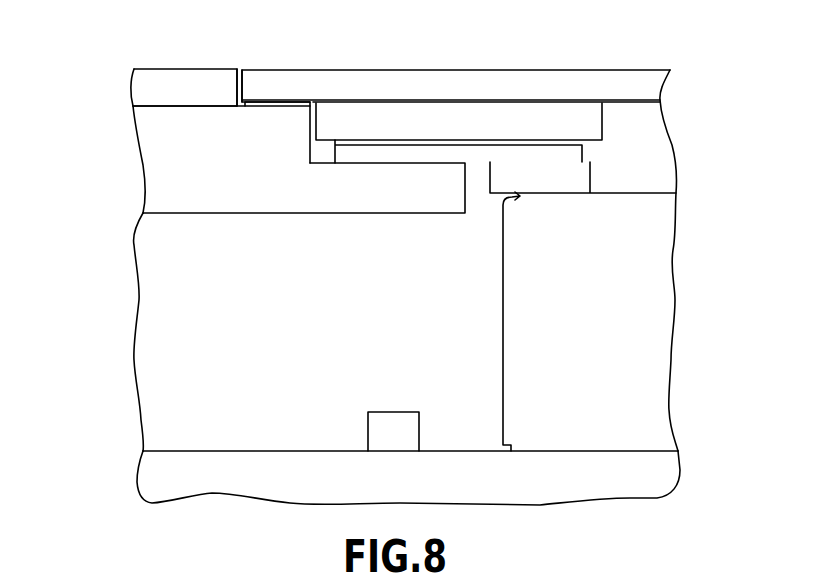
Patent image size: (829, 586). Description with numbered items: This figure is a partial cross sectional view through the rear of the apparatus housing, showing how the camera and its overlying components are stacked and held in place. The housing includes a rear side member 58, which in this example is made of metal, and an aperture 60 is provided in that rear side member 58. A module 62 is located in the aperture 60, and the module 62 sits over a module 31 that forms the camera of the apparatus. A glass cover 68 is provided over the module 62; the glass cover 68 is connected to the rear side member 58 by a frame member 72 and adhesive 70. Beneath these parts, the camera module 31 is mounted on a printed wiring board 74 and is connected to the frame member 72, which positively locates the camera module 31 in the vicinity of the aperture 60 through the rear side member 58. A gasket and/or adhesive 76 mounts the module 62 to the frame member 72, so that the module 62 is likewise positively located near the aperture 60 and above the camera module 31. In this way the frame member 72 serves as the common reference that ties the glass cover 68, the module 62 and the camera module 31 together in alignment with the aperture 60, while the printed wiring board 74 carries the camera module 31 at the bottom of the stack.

The rear side member 58 is at (147, 78).
The aperture 60 is at (240, 82).
The glass cover 68 is at (355, 83).
The adhesive 70 is at (273, 110).
The module 62 is at (437, 112).
The gasket and/or adhesive 76 is at (578, 155).
The frame member 72 is at (150, 182).
The camera module 31 is at (667, 295).
The printed wiring board 74 is at (672, 467).